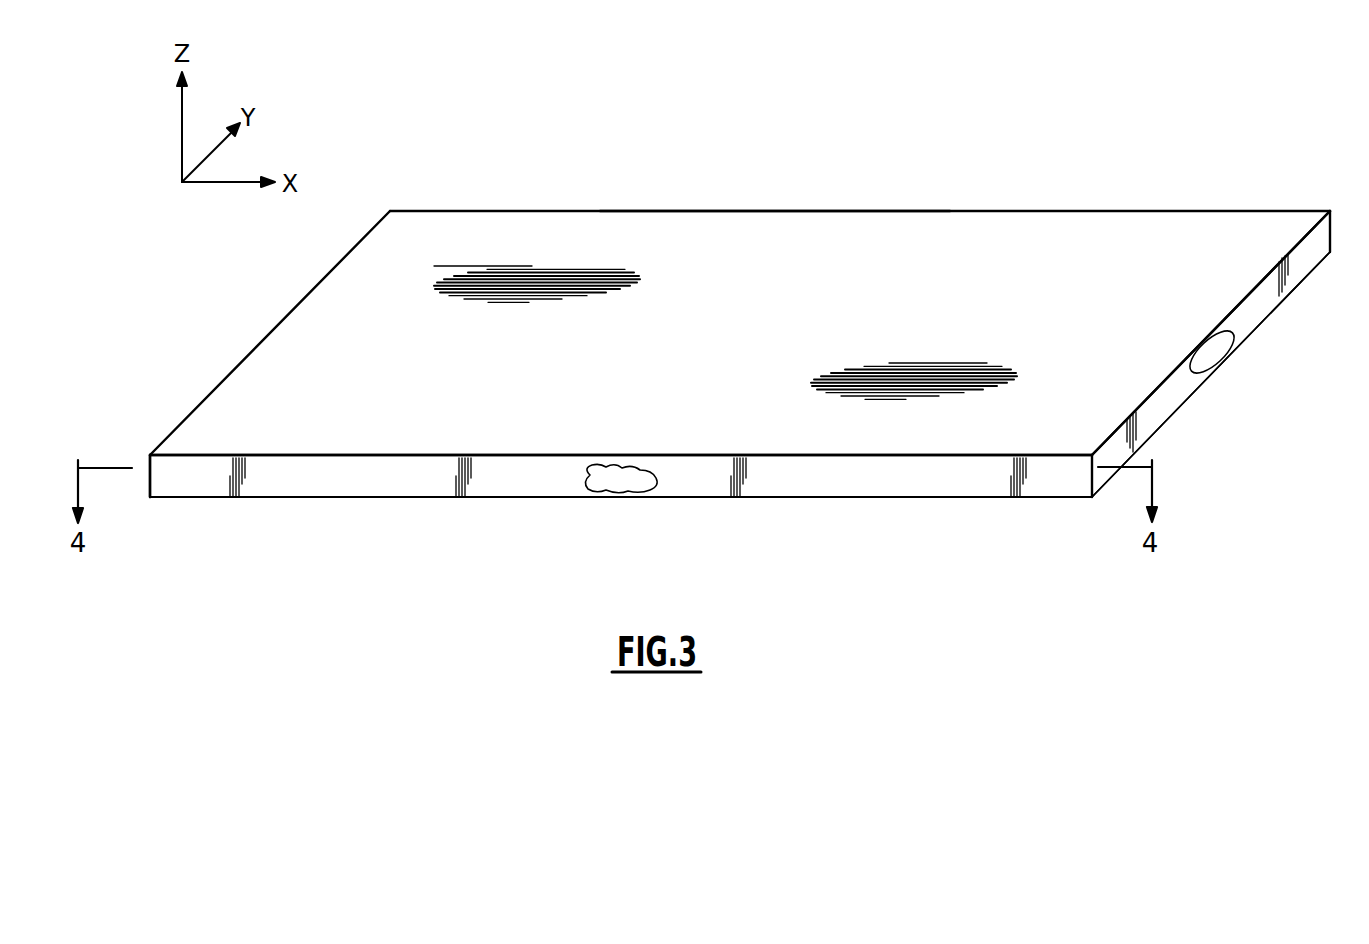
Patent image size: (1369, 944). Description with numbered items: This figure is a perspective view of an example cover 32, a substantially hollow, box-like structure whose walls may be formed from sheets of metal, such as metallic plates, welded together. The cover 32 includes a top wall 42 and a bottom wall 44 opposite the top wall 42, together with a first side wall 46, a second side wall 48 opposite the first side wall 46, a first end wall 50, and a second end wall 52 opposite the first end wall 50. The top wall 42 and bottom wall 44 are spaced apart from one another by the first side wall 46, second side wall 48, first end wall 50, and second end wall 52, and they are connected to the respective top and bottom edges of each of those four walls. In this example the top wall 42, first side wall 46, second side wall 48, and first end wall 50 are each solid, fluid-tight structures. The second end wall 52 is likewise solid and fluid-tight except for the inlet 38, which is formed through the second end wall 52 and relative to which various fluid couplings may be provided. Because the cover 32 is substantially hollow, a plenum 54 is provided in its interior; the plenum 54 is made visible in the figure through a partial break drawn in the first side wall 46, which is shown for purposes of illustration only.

The cover 32 is at (1118, 211).
The inlet 38 is at (1233, 334).
The top wall 42 is at (865, 235).
The bottom wall 44 is at (987, 497).
The first side wall 46 is at (497, 477).
The second side wall 48 is at (772, 211).
The first end wall 50 is at (148, 458).
The second end wall 52 is at (1170, 393).
The plenum 54 is at (613, 478).